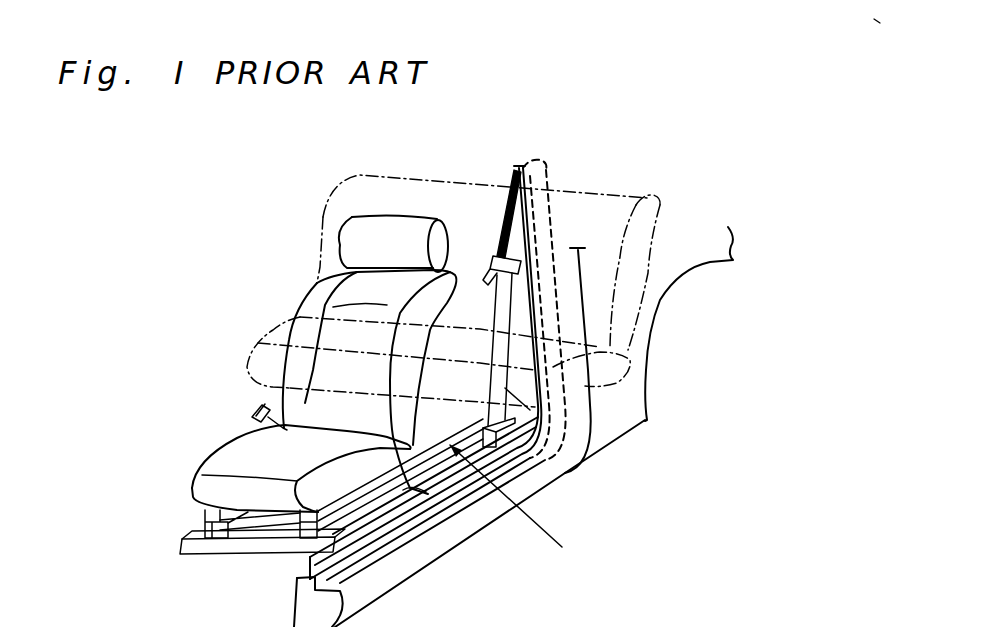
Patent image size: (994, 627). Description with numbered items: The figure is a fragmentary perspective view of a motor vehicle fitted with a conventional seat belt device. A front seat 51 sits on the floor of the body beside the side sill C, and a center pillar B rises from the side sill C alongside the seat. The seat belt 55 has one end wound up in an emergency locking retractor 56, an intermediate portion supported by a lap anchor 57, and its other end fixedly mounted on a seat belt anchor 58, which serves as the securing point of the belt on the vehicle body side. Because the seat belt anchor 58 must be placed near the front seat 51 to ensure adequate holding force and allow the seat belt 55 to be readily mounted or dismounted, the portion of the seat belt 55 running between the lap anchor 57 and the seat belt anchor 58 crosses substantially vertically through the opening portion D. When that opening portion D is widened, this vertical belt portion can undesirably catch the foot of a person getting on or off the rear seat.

The front seat 51 is at (270, 395).
The seat belt 55 is at (558, 425).
The emergency locking retractor 56 is at (570, 410).
The lap anchor 57 is at (543, 168).
The seat belt anchor 58 is at (500, 440).
The center pillar B is at (573, 232).
The side sill C is at (460, 527).
The opening portion D is at (517, 505).